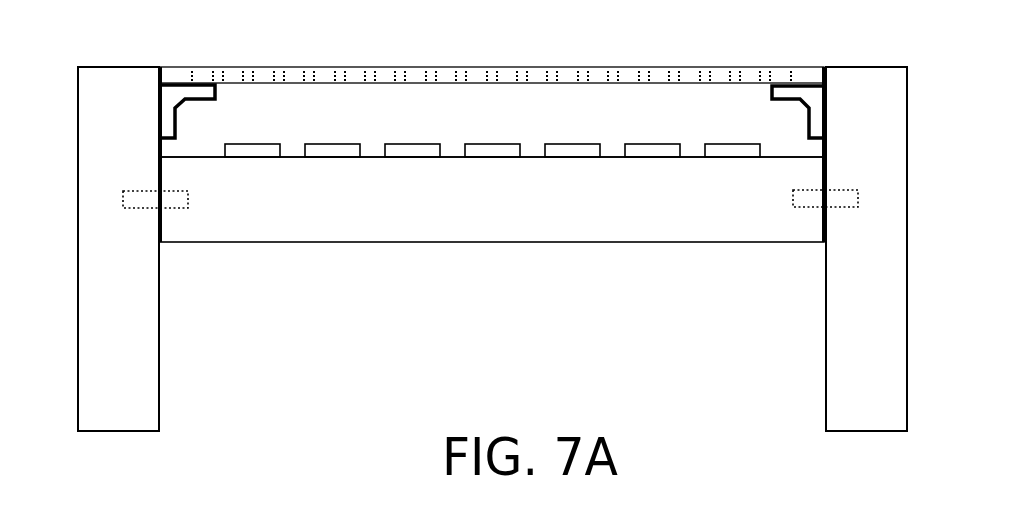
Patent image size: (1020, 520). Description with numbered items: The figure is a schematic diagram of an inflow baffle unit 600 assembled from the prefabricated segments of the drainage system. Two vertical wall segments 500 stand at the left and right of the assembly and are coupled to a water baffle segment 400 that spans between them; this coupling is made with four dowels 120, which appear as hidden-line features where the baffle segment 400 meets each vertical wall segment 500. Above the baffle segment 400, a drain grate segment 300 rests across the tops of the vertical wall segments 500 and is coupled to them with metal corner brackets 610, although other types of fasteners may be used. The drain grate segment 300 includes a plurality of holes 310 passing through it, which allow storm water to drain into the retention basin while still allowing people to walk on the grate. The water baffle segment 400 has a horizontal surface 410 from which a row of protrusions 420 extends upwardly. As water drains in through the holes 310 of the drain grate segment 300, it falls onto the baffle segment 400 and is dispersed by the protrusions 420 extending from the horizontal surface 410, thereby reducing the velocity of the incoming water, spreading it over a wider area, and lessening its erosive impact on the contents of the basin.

The dowel 120 is at (153, 203).
The drain grate segment 300 is at (537, 67).
The holes 310 is at (370, 67).
The water baffle segment 400 is at (358, 244).
The horizontal surface 410 is at (378, 156).
The protrusions 420 is at (252, 132).
The vertical wall segment 500 is at (161, 378).
The baffle unit 600 is at (450, 60).
The metal corner brackets 610 is at (185, 100).